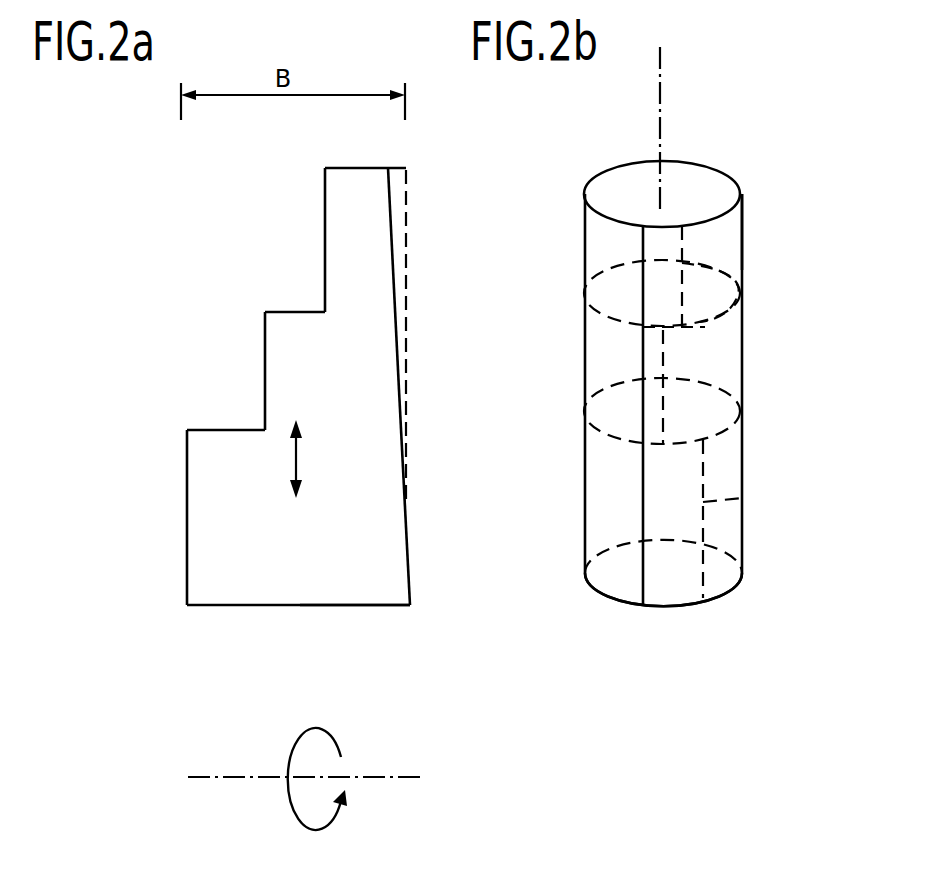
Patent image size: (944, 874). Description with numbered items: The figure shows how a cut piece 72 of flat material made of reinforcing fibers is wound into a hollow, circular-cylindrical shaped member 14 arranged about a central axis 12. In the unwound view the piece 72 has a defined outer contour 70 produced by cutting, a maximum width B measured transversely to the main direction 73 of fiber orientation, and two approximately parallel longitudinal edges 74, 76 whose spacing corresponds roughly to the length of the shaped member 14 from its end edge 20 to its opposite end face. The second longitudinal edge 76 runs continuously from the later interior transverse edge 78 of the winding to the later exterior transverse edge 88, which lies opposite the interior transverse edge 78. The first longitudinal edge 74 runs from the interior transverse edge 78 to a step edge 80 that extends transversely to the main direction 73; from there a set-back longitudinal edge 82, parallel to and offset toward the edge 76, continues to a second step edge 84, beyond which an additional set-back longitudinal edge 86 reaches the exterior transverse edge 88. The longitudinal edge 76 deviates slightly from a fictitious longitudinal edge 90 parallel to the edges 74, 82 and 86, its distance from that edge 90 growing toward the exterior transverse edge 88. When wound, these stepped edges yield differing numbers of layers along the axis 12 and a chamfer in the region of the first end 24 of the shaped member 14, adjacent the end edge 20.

In FIG. 2A, the central axis 12 is at (375, 768).
In FIG. 2B, the central axis 12 is at (661, 98).
In FIG. 2B, the shaped member 14 is at (758, 399).
In FIG. 2B, the end edge 20 is at (680, 163).
In FIG. 2B, the first end 24 is at (742, 222).
In FIG. 2A, the outer contour 70 is at (270, 612).
In FIG. 2A, the piece of flat material 72 is at (409, 543).
In FIG. 2A, the main direction 73 is at (300, 462).
In FIG. 2A, the first longitudinal edge 74 is at (187, 462).
In FIG. 2B, the first longitudinal edge 74 is at (726, 605).
In FIG. 2A, the second longitudinal edge 76 is at (394, 238).
In FIG. 2B, the second longitudinal edge 76 is at (742, 183).
In FIG. 2A, the interior transverse edge 78 is at (362, 605).
In FIG. 2B, the interior transverse edge 78 is at (643, 470).
In FIG. 2A, the step edge 80 is at (226, 430).
In FIG. 2B, the step edge 80 is at (742, 498).
In FIG. 2A, the set-back longitudinal edge 82 is at (265, 325).
In FIG. 2B, the set-back longitudinal edge 82 is at (703, 441).
In FIG. 2A, the step edge 84 is at (296, 310).
In FIG. 2B, the step edge 84 is at (667, 362).
In FIG. 2A, the additional longitudinal edge 86 is at (325, 210).
In FIG. 2B, the additional longitudinal edge 86 is at (705, 327).
In FIG. 2A, the exterior transverse edge 88 is at (378, 168).
In FIG. 2B, the exterior transverse edge 88 is at (682, 256).
In FIG. 2A, the fictitious longitudinal edge 90 is at (408, 303).